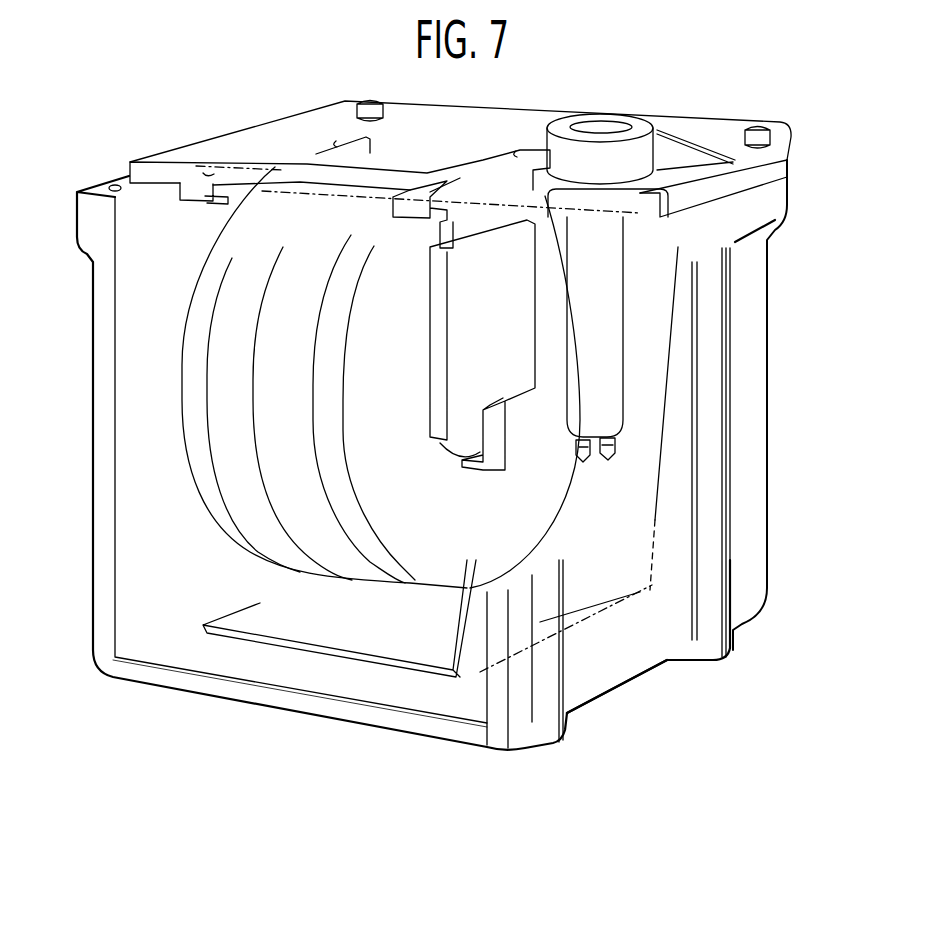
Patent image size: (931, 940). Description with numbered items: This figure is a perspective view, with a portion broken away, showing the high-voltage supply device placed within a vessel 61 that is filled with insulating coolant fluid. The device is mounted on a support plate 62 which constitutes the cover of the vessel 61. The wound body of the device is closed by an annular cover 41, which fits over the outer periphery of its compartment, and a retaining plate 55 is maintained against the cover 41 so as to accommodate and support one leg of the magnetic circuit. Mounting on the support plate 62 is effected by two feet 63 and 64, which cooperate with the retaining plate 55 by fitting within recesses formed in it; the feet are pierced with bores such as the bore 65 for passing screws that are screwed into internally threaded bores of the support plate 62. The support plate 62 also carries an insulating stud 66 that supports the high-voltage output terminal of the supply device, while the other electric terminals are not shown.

The annular cover 41 is at (540, 527).
The plate 55 is at (457, 360).
The vessel 61 is at (787, 503).
The support plate 62 is at (785, 150).
The foot 63 is at (192, 197).
The foot 64 is at (414, 214).
The bore 65 is at (212, 170).
The insulating stud 66 is at (615, 330).